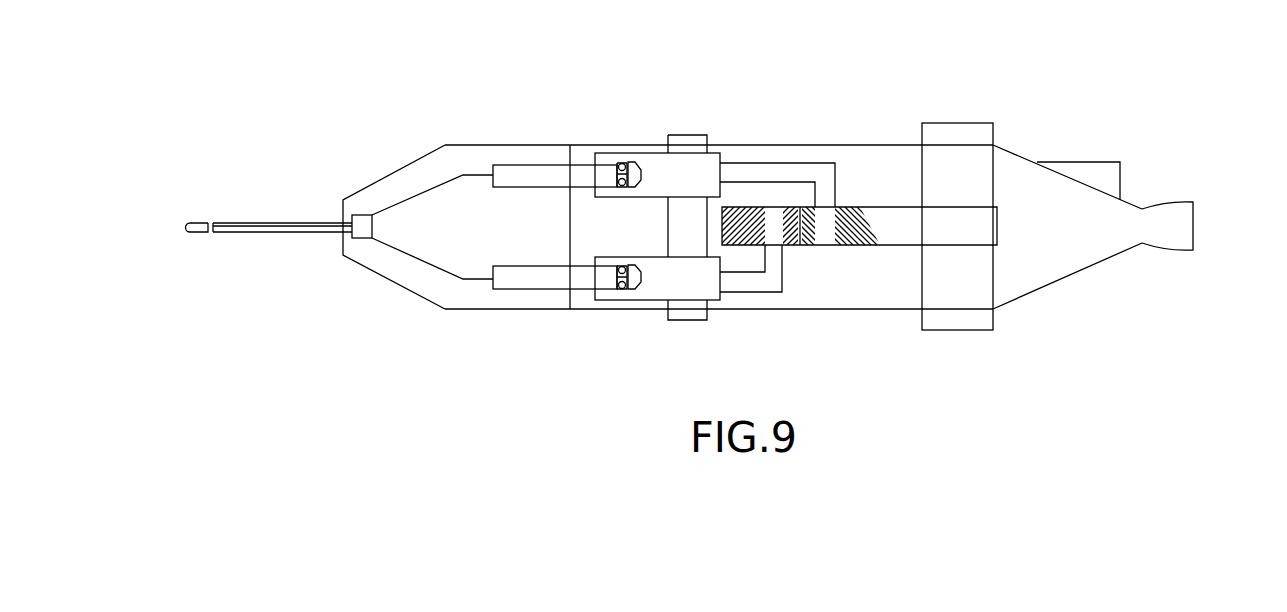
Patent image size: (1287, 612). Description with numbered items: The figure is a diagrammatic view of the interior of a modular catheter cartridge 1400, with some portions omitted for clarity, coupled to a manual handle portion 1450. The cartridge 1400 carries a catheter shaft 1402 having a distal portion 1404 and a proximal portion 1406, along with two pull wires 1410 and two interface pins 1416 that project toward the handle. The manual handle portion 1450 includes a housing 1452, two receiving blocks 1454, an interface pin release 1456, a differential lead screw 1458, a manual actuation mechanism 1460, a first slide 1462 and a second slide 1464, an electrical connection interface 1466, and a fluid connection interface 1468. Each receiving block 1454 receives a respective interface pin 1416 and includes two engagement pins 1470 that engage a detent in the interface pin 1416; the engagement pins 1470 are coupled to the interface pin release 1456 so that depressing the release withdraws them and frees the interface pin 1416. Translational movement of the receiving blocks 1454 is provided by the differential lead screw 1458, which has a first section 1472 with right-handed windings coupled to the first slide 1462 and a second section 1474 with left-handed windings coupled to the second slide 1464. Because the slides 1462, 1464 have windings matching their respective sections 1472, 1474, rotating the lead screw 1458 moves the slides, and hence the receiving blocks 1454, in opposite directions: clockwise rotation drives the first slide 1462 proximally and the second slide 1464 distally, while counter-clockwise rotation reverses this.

The modular catheter cartridge 1400 is at (393, 133).
The catheter shaft 1402 is at (239, 222).
The distal portion 1404 is at (195, 222).
The proximal portion 1406 is at (297, 222).
The pull wires 1410 is at (429, 208).
The interface pins 1416 is at (512, 188).
The manual handle portion 1450 is at (763, 104).
The housing 1452 is at (890, 144).
The receiving blocks 1454 is at (650, 302).
The interface pin release 1456 is at (685, 320).
The differential lead screw 1458 is at (977, 237).
The manual actuation mechanism 1460 is at (968, 122).
The first slide 1462 is at (772, 292).
The second slide 1464 is at (837, 177).
The electrical connection interface 1466 is at (1120, 172).
The fluid connection interface 1468 is at (1195, 210).
The engagement pins 1470 is at (621, 287).
The first section 1472 is at (790, 247).
The second section 1474 is at (860, 247).